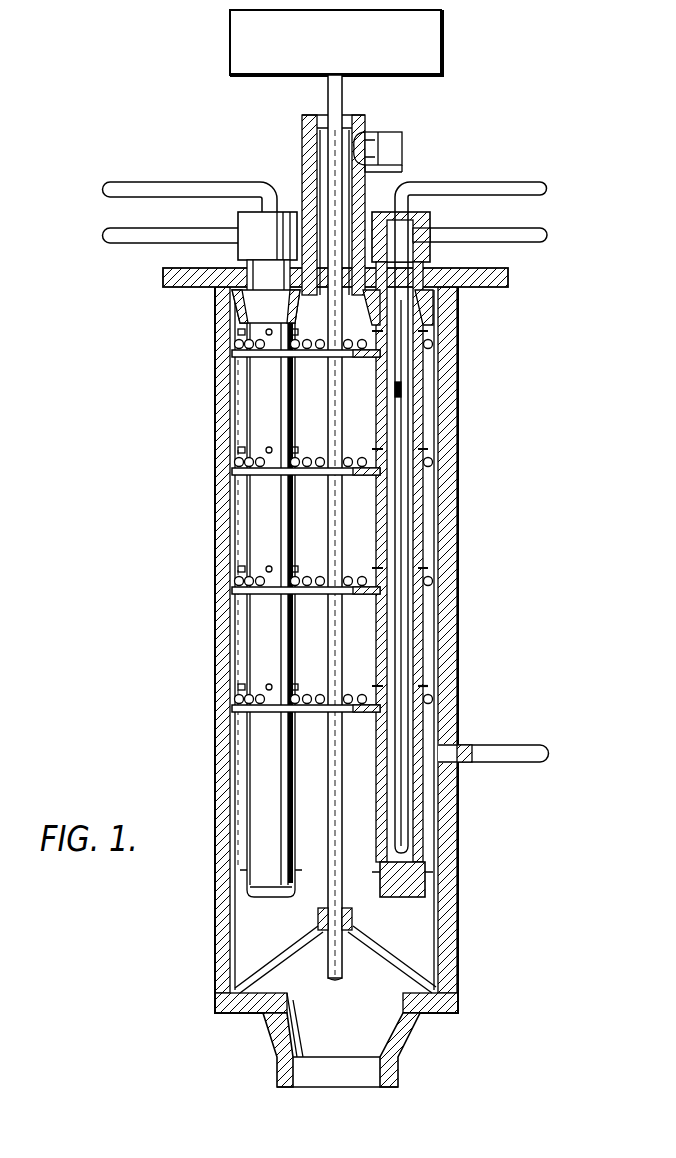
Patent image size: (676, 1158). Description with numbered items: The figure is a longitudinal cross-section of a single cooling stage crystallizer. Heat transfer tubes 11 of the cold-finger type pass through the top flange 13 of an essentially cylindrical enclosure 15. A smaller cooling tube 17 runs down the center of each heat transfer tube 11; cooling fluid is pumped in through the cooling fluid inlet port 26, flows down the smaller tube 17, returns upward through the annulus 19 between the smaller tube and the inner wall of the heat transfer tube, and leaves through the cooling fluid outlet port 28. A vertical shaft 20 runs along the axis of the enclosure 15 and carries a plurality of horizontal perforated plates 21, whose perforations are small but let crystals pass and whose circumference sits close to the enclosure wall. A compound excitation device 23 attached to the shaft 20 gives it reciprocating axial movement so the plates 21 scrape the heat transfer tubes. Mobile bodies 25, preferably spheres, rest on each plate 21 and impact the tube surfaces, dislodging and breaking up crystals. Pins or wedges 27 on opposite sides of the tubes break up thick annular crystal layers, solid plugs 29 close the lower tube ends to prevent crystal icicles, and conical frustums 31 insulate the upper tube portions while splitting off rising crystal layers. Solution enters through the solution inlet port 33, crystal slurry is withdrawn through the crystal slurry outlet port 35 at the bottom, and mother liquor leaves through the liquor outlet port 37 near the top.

The heat transfer tube 11 is at (425, 371).
The top flange 13 is at (497, 289).
The cylindrical enclosure 15 is at (457, 501).
The smaller cooling tube 17 is at (410, 616).
The annulus 19 is at (410, 391).
The vertical shaft 20 is at (326, 96).
The perforated plate 21 is at (297, 363).
The compound excitation device 23 is at (345, 54).
The mobile bodies 25 is at (265, 583).
The cooling fluid inlet port 26 is at (452, 182).
The pins or wedges 27 is at (430, 690).
The cooling fluid outlet port 28 is at (512, 228).
The solid plug 29 is at (425, 887).
The conical frustum 31 is at (435, 306).
The solution inlet port 33 is at (490, 746).
The crystal slurry outlet port 35 is at (402, 1067).
The liquor outlet port 37 is at (384, 132).